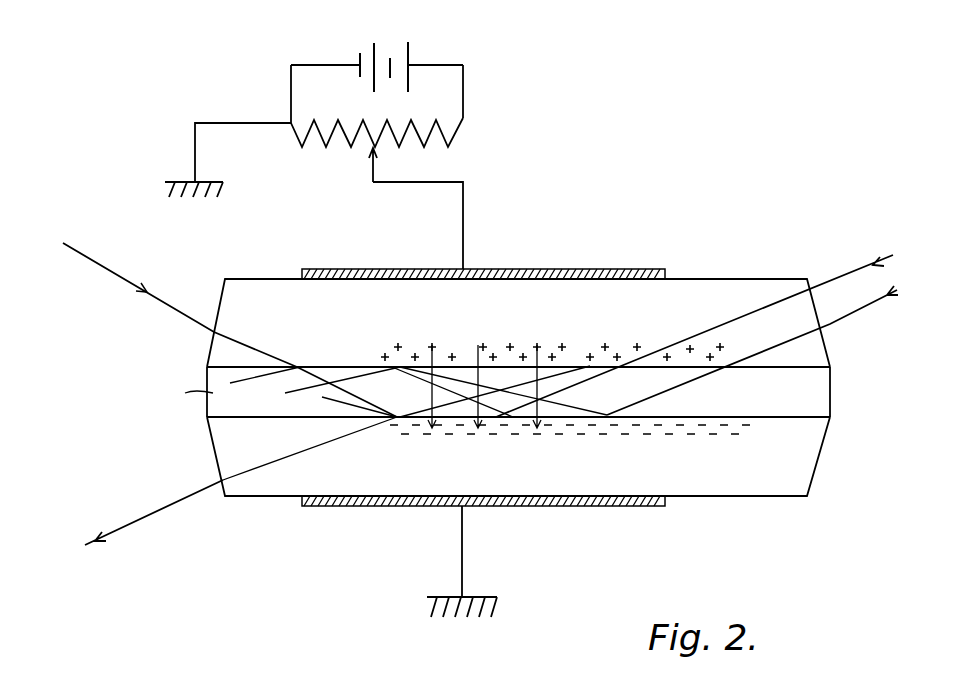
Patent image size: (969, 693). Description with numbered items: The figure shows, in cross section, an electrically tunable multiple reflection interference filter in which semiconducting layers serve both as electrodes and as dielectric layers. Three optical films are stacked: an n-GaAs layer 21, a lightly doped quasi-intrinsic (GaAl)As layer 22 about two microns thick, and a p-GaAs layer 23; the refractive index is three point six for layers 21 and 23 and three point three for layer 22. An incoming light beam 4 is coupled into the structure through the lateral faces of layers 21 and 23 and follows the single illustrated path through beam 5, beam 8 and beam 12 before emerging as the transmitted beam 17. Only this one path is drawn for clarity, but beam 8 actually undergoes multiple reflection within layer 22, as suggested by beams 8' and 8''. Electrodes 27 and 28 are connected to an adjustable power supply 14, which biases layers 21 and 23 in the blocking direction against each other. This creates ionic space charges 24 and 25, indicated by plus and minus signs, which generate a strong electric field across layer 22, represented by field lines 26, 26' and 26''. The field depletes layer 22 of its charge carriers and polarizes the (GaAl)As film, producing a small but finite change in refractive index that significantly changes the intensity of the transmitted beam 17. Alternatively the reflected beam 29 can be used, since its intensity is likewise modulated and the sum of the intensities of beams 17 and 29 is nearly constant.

The adjustable power supply 14 is at (377, 65).
The electrode 27 is at (582, 268).
The electrode 28 is at (557, 507).
The n-GaAs optical film 21 is at (675, 320).
The Ga0.7Al0.3As optical film 22 is at (760, 398).
The p-GaAs optical film 23 is at (642, 470).
The ionic space charge 24 is at (503, 335).
The ionic space charge 25 is at (502, 430).
The beam 8 is at (560, 385).
The beam 8' is at (465, 385).
The beam 8'' is at (384, 386).
The field line 26 is at (348, 392).
The field line 26' is at (491, 391).
The field line 26'' is at (503, 391).
The reflected beam 29 is at (230, 330).
The beam 12 is at (290, 453).
The transmitted beam 17 is at (154, 515).
The beam 5 is at (758, 316).
The incoming light beam 4 is at (752, 347).